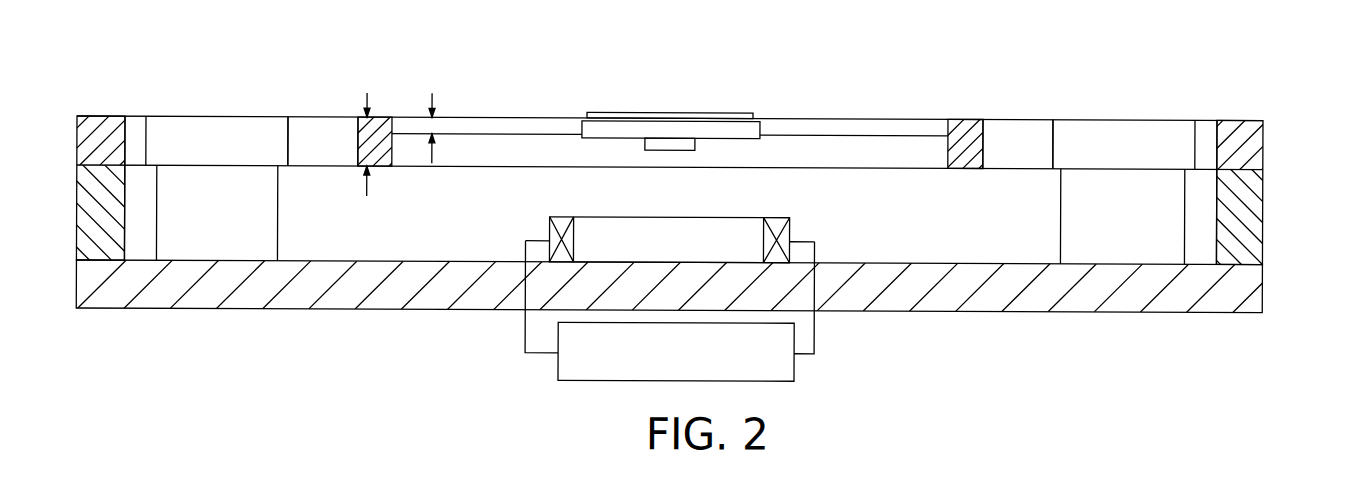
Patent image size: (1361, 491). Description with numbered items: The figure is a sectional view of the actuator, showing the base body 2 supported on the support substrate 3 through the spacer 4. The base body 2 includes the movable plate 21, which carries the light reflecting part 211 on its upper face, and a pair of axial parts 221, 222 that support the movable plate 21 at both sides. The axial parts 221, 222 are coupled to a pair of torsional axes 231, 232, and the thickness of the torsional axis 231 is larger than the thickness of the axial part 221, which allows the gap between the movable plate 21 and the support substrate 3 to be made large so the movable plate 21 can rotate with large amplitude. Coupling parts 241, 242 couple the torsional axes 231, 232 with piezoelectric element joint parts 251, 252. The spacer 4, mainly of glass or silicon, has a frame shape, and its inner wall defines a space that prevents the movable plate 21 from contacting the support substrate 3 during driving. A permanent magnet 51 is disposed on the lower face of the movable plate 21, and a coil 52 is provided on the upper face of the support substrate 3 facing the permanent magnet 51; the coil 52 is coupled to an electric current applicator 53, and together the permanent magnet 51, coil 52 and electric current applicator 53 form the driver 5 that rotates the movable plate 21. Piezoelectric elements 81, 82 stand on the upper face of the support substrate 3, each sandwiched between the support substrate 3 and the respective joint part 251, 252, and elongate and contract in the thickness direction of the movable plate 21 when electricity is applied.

The base body 2 is at (673, 224).
The support substrate 3 is at (1254, 274).
The spacer 4 is at (1256, 214).
The driver 5 is at (618, 275).
The movable plate 21 is at (674, 126).
The light reflecting part 211 is at (623, 112).
The axial part 221 is at (472, 126).
The axial part 222 is at (823, 124).
The torsional axis 231 is at (386, 144).
The torsional axis 232 is at (965, 126).
The coupling part 241 is at (313, 132).
The coupling part 242 is at (1028, 128).
The piezoelectric element joint part 251 is at (195, 132).
The piezoelectric element joint part 252 is at (1125, 128).
The permanent magnet 51 is at (673, 143).
The coil 52 is at (563, 255).
The electric current applicator 53 is at (559, 361).
The piezoelectric element 81 is at (200, 248).
The piezoelectric element 82 is at (1125, 248).